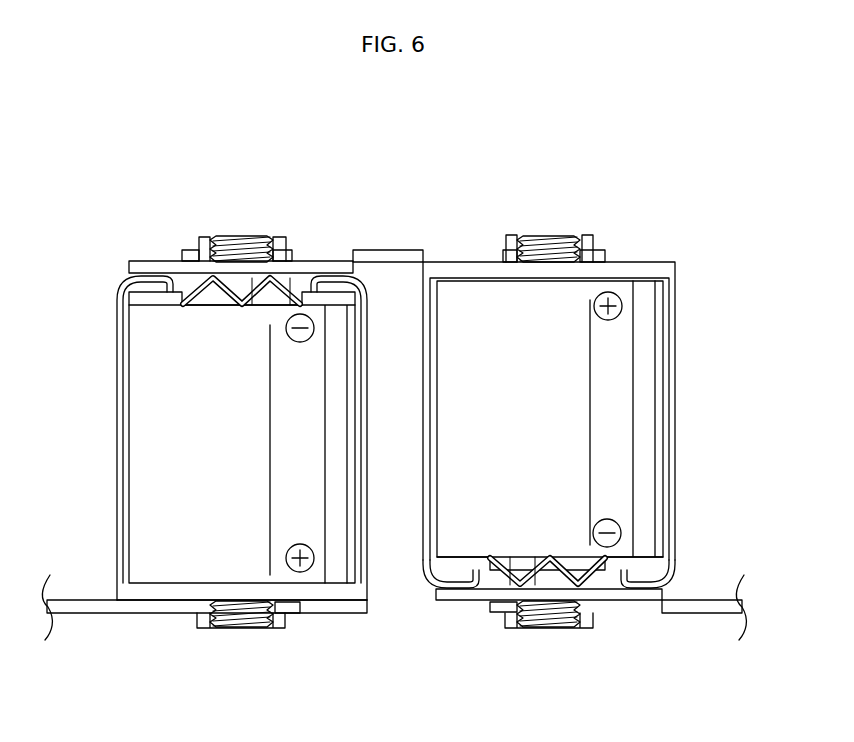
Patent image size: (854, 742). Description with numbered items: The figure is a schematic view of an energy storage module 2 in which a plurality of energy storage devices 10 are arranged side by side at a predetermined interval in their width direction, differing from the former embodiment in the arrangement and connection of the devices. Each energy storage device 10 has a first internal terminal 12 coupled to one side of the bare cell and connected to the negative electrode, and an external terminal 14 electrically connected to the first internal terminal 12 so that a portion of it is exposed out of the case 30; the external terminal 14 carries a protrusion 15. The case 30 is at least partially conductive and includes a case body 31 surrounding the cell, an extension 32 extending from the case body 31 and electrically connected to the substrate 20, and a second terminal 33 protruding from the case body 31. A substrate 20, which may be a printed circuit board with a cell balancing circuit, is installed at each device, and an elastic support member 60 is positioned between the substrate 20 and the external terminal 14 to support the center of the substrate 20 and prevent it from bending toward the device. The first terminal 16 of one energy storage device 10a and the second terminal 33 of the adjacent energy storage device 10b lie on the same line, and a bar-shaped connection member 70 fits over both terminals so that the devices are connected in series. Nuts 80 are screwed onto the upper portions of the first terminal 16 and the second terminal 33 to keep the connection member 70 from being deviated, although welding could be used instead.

The energy storage module 2 is at (103, 149).
The energy storage device 10 is at (396, 432).
The energy storage device 10a is at (138, 441).
The energy storage device 10b is at (655, 440).
The first internal terminal 12 is at (283, 253).
The external terminal 14 is at (290, 607).
The protrusion 15 is at (300, 290).
The first terminal 16 is at (252, 240).
The substrate 20 is at (142, 262).
The case 30 is at (95, 398).
The case body 31 is at (135, 605).
The extension 32 is at (123, 285).
The second terminal 33 is at (235, 628).
The support member 60 is at (192, 285).
The connection member 70 is at (85, 613).
The nut 80 is at (215, 237).